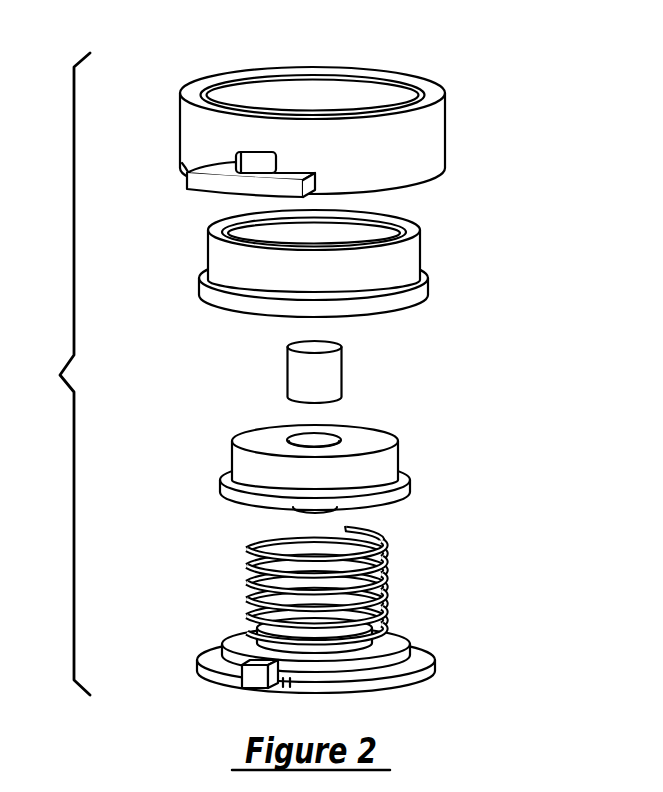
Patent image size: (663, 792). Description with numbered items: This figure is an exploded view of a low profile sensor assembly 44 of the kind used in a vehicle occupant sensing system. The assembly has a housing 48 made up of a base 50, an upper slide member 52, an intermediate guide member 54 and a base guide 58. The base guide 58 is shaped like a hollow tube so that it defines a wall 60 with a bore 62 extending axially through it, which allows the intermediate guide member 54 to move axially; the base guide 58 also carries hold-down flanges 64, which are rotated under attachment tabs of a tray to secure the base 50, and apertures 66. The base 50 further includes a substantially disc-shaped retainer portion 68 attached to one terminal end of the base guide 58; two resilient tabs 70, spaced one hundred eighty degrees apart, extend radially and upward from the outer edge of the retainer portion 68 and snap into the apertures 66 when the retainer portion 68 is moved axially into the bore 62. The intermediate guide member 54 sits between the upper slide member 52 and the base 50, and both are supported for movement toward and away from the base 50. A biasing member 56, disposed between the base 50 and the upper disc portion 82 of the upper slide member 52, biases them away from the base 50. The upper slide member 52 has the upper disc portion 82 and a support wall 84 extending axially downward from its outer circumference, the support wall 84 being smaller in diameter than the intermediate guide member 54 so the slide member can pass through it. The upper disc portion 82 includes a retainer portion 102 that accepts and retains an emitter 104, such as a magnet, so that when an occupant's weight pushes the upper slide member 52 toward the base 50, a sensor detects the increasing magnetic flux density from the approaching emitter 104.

The low profile sensor assembly 44 is at (53, 374).
The housing 48 is at (508, 312).
The base 50 is at (325, 668).
The upper slide member 52 is at (320, 454).
The intermediate guide member 54 is at (412, 260).
The biasing member 56 is at (382, 573).
The base guide 58 is at (347, 101).
The wall 60 is at (436, 158).
The bore 62 is at (303, 79).
The hold-down flanges 64 is at (200, 183).
The apertures 66 is at (236, 155).
The retainer portion 68 is at (373, 682).
The resilient tabs 70 is at (240, 672).
The upper disc portion 82 is at (370, 437).
The support wall 84 is at (247, 467).
The retainer portion 102 is at (308, 437).
The emitter 104 is at (337, 377).